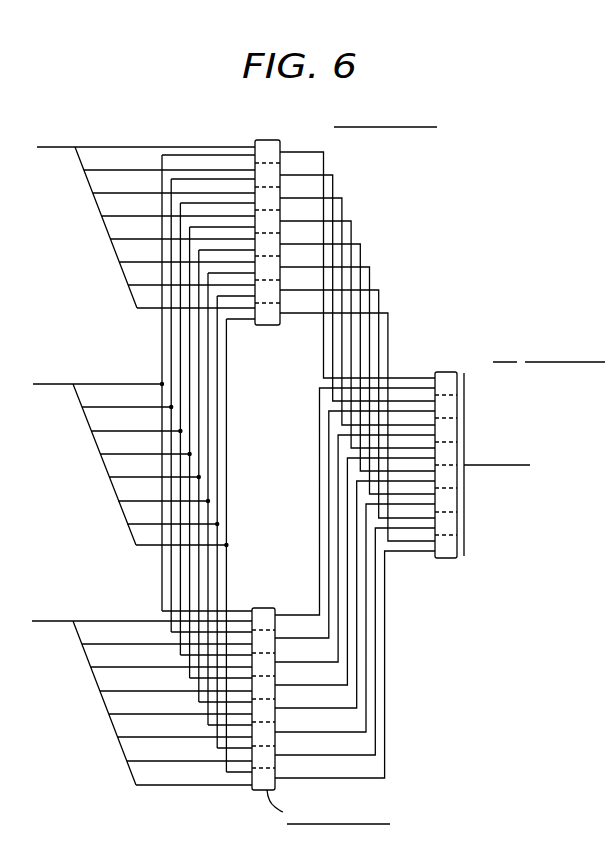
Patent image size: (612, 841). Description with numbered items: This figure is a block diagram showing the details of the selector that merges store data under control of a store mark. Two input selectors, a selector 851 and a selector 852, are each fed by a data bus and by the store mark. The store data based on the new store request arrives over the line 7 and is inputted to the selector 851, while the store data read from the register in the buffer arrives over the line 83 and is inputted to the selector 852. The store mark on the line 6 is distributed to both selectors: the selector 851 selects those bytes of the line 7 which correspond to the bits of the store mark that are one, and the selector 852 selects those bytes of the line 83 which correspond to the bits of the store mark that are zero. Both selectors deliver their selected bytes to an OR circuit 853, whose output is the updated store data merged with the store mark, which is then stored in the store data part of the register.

The line 7 is at (57, 147).
The line 6 is at (57, 384).
The line 83 is at (57, 621).
The selector 851 is at (267, 140).
The selector 852 is at (262, 608).
The OR circuit 853 is at (443, 372).